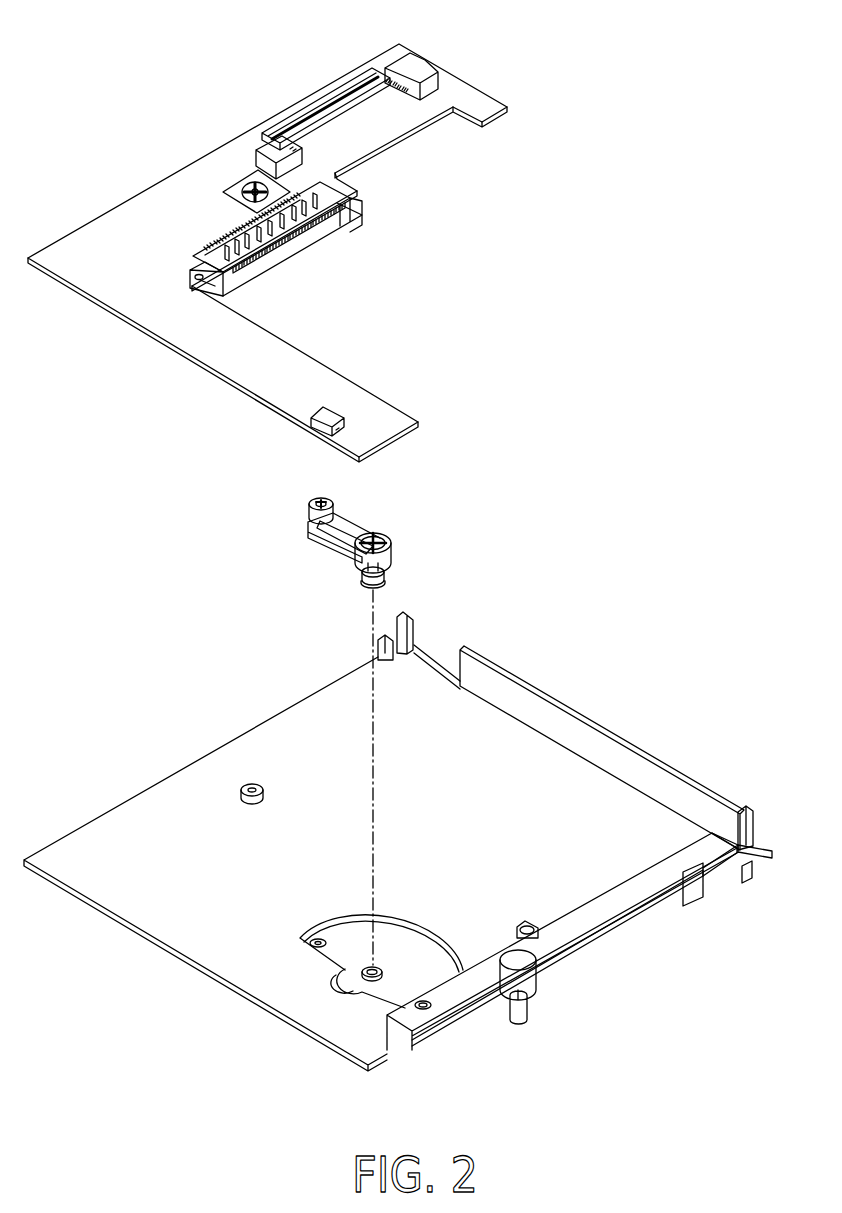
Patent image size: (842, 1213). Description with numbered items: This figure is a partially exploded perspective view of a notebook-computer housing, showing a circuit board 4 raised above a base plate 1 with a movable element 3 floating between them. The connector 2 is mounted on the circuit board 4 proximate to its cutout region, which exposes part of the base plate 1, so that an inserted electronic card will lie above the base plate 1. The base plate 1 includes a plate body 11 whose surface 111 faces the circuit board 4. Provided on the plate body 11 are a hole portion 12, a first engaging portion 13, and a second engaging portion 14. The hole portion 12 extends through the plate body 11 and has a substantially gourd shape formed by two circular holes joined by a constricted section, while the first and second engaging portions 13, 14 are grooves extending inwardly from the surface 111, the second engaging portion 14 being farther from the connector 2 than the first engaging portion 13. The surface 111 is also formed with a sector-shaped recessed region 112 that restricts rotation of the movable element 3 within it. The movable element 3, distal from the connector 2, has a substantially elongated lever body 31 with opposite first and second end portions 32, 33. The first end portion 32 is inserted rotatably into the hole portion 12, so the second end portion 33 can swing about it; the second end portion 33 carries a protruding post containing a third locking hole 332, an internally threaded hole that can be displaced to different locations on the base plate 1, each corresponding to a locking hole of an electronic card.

The base plate 1 is at (398, 841).
The plate body 11 is at (230, 987).
The surface 111 is at (125, 830).
The sector-shaped recessed region 112 is at (352, 936).
The hole portion 12 is at (382, 955).
The first engaging portion 13 is at (318, 938).
The second engaging portion 14 is at (428, 998).
The connector 2 is at (220, 240).
The movable element 3 is at (341, 704).
The lever body 31 is at (337, 545).
The first end portion 32 is at (362, 582).
The second end portion 33 is at (312, 507).
The third locking hole 332 is at (322, 498).
The circuit board 4 is at (108, 235).